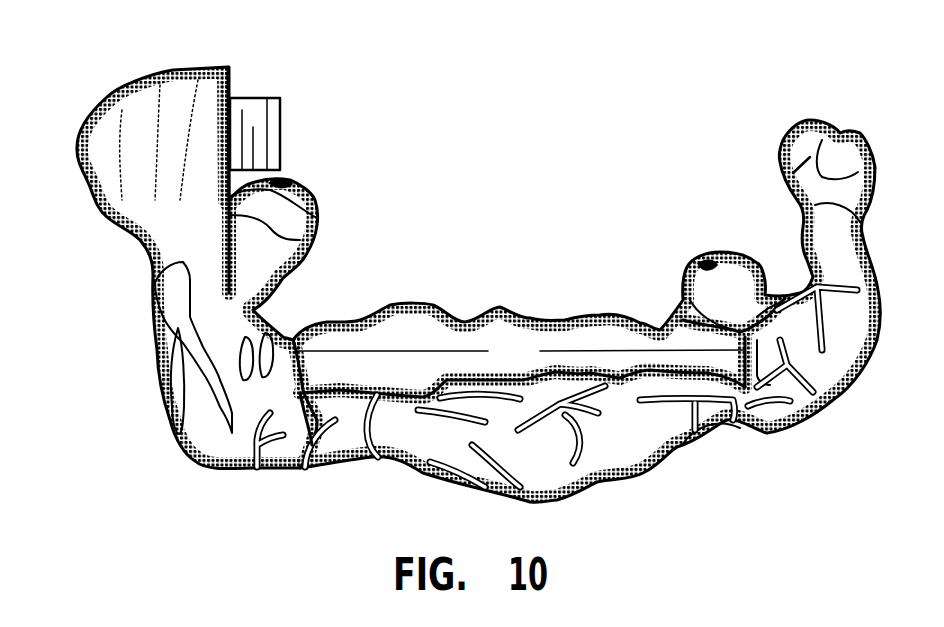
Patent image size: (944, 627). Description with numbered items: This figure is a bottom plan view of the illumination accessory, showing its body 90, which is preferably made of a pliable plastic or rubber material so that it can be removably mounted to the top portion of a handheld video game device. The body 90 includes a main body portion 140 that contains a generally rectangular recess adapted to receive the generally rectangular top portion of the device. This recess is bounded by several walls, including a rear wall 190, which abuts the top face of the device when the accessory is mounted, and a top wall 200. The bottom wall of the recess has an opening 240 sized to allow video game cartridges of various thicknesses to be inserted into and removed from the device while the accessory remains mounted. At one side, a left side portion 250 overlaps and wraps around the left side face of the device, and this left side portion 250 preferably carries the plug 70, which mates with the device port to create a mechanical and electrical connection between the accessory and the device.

The body 90 is at (641, 487).
The left side portion 250 is at (127, 78).
The plug 70 is at (257, 97).
The opening 240 is at (533, 361).
The top wall 200 is at (510, 307).
The rear wall 190 is at (443, 383).
The main body portion 140 is at (313, 472).